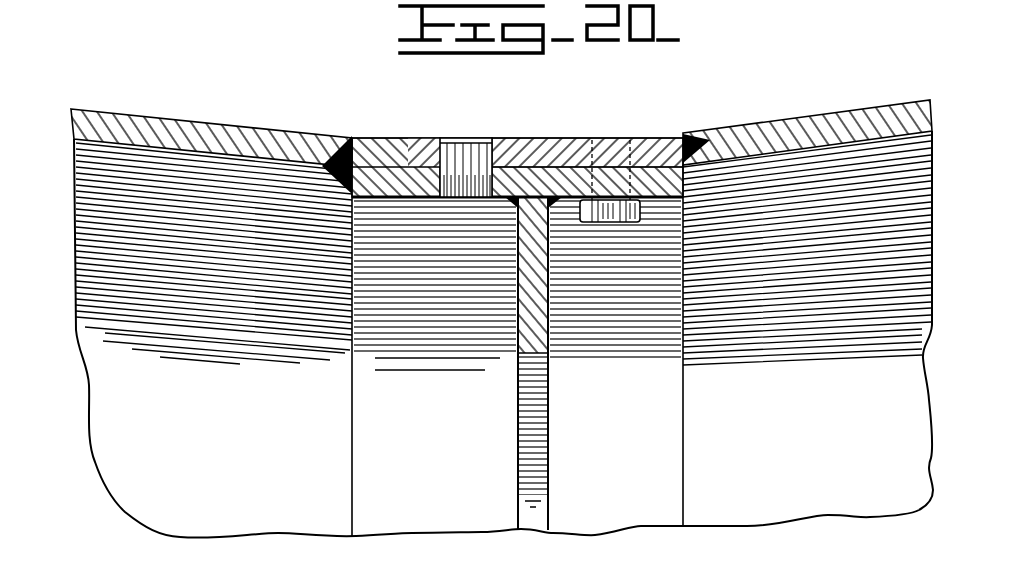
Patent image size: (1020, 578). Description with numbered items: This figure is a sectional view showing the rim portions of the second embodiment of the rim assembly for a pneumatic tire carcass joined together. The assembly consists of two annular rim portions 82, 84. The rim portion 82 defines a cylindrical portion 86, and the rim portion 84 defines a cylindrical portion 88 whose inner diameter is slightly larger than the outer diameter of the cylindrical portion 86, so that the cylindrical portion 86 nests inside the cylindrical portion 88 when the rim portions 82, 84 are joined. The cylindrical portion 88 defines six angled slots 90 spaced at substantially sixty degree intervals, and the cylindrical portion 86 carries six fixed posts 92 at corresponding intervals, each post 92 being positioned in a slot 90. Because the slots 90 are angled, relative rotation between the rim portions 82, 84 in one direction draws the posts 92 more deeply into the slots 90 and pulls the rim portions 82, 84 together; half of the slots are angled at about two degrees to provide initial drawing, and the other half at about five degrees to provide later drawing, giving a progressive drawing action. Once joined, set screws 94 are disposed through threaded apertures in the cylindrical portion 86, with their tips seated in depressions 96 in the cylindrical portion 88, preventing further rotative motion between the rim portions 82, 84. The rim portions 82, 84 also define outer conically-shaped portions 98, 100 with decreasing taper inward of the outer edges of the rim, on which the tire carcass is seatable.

The rim portion 82 is at (230, 150).
The rim portion 84 is at (836, 147).
The cylindrical portion 86 is at (372, 189).
The cylindrical portion 88 is at (550, 138).
The angled slot 90 is at (452, 145).
The post 92 is at (457, 187).
The set screw 94 is at (607, 220).
The depression 96 is at (617, 148).
The conically-shaped portion 98 is at (166, 108).
The conically-shaped portion 100 is at (796, 110).